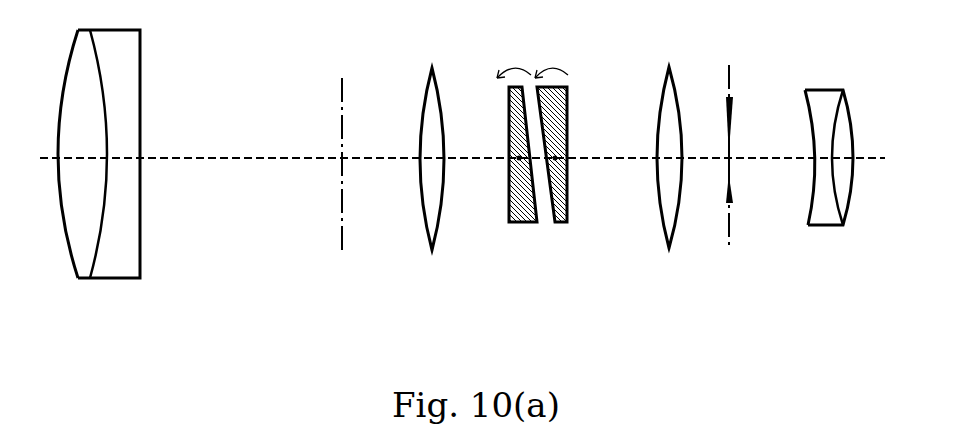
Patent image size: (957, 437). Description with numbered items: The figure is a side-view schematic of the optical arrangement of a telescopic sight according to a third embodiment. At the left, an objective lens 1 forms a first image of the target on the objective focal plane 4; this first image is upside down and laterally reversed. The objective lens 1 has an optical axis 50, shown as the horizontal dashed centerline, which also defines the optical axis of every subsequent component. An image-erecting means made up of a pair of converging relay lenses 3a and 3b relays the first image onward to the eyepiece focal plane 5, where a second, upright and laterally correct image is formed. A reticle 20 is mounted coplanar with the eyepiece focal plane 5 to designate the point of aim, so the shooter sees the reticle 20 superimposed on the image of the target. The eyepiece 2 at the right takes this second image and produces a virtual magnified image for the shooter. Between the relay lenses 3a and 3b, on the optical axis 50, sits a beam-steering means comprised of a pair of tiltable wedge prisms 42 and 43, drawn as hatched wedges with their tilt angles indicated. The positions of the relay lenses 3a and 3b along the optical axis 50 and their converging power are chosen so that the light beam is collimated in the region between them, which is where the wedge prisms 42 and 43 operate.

The objective lens 1 is at (142, 253).
The optical axis 50 is at (153, 159).
The objective focal plane 4 is at (342, 117).
The converging lens 3a is at (430, 233).
The tiltable wedge prism 42 is at (520, 223).
The tiltable wedge prism 43 is at (560, 225).
The converging lens 3b is at (662, 220).
The reticle 20 is at (730, 103).
The eyepiece focal plane 5 is at (729, 233).
The eyepiece 2 is at (820, 227).